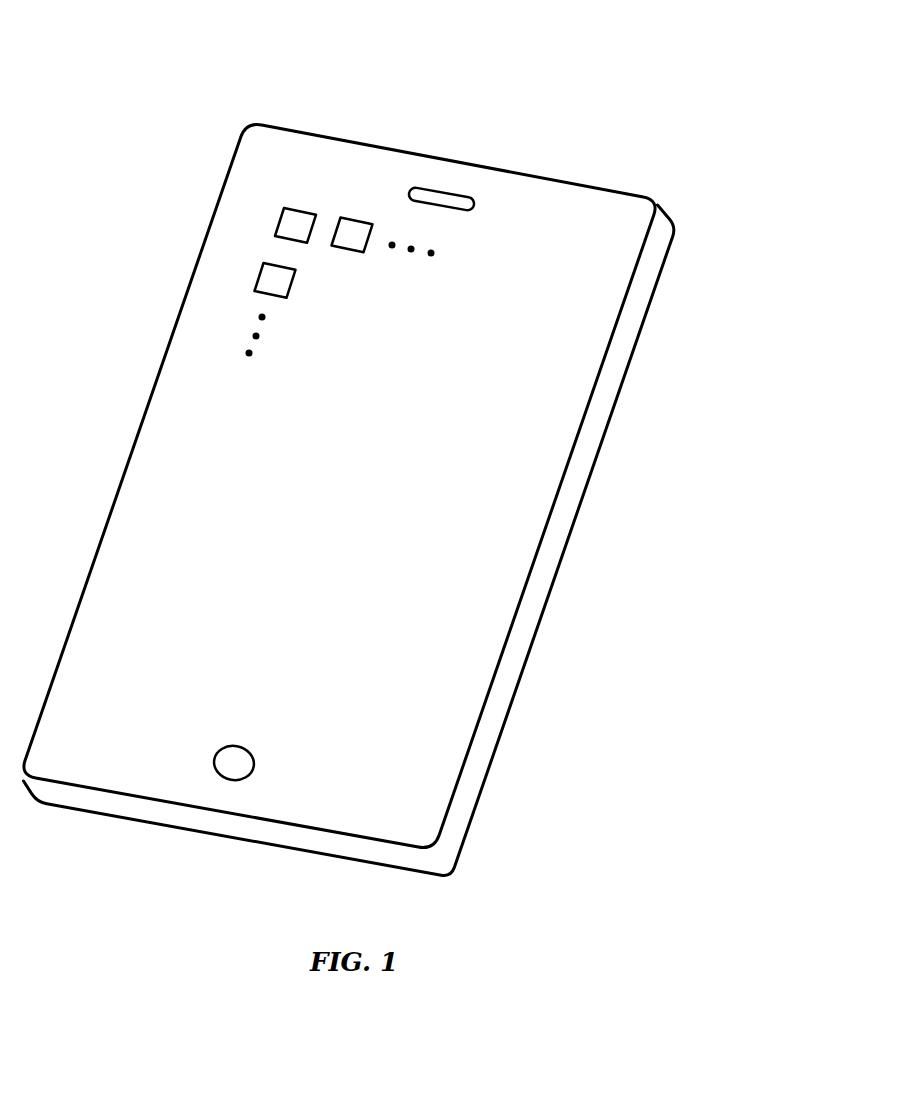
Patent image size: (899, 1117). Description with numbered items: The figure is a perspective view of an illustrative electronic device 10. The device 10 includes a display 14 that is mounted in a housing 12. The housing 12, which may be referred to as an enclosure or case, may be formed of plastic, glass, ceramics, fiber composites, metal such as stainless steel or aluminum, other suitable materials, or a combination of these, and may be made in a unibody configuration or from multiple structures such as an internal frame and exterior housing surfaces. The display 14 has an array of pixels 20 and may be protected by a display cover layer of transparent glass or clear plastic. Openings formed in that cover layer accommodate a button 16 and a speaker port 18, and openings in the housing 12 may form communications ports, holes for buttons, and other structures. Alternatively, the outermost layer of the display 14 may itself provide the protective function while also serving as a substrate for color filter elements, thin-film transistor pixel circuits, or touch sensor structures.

The electronic device 10 is at (699, 76).
The housing 12 is at (665, 221).
The display 14 is at (519, 439).
The button 16 is at (233, 782).
The speaker port 18 is at (447, 190).
The array of pixels 20 is at (281, 212).